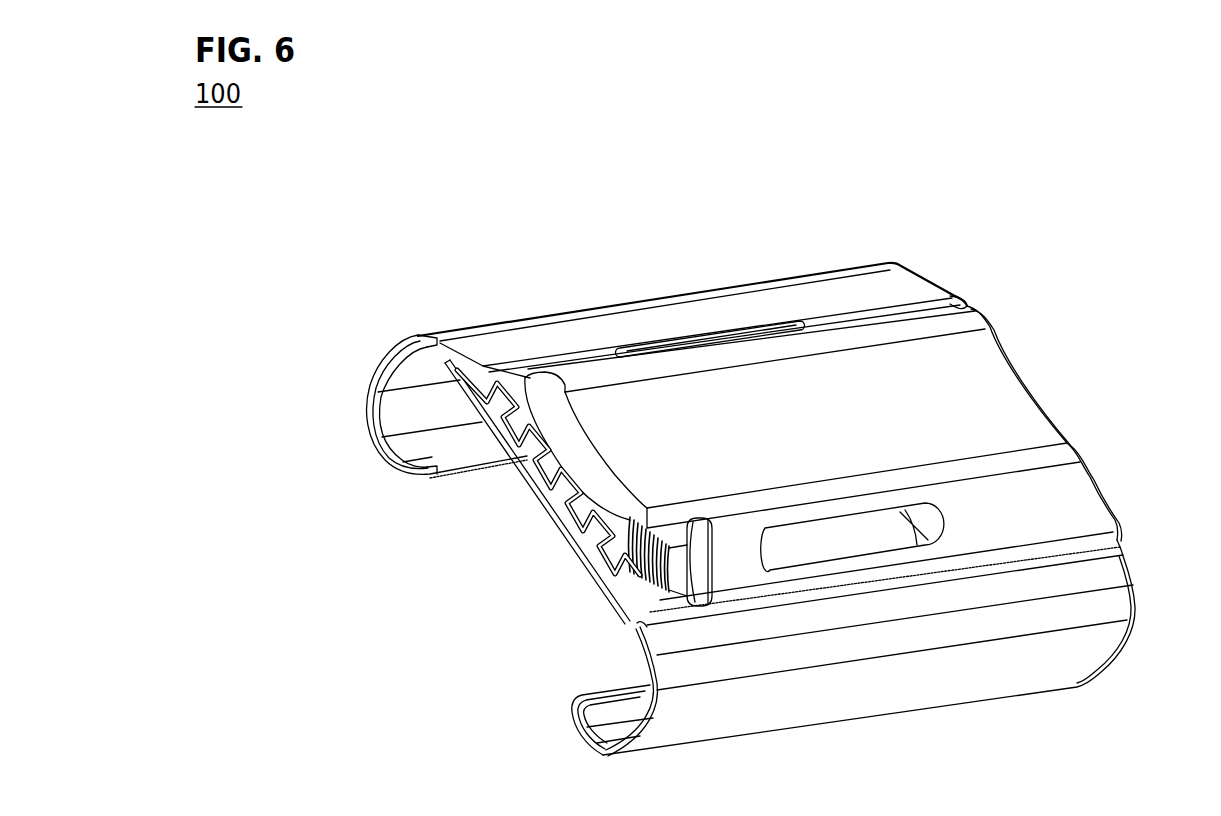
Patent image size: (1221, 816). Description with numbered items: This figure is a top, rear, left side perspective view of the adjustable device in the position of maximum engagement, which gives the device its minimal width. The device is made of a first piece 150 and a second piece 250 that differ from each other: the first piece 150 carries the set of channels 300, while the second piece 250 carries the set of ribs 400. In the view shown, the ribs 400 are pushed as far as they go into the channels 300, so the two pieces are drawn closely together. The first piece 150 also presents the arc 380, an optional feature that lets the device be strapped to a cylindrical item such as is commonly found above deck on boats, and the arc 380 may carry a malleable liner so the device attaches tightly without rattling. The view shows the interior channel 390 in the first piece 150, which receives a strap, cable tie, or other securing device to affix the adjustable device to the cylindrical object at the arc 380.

The first piece 150 is at (490, 323).
The second piece 250 is at (1107, 607).
The set of channels 300 is at (563, 482).
The arc 380 is at (776, 449).
The interior channel 390 is at (640, 352).
The set of ribs 400 is at (530, 447).